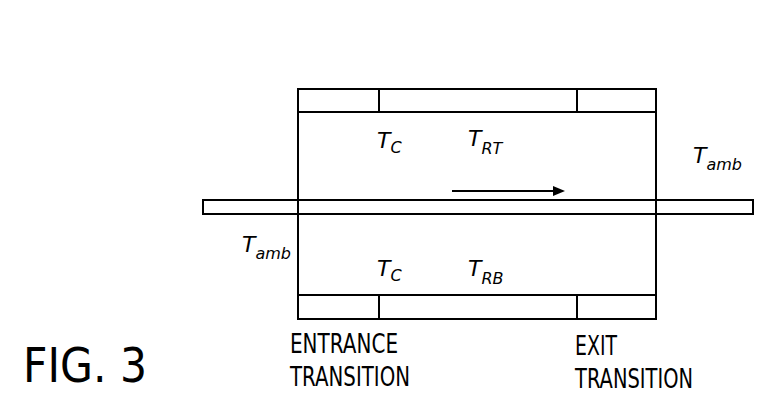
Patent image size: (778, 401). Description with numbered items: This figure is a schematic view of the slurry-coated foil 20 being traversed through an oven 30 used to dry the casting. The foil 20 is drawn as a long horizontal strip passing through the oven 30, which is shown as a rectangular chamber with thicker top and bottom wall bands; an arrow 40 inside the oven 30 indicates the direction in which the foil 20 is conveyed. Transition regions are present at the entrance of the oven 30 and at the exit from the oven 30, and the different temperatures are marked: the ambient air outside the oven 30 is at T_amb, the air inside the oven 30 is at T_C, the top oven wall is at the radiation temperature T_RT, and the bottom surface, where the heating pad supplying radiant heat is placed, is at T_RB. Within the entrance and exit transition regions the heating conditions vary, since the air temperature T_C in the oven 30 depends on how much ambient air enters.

The foil 20 is at (268, 208).
The oven 30 is at (491, 81).
The conveyance direction arrow 40 is at (508, 191).